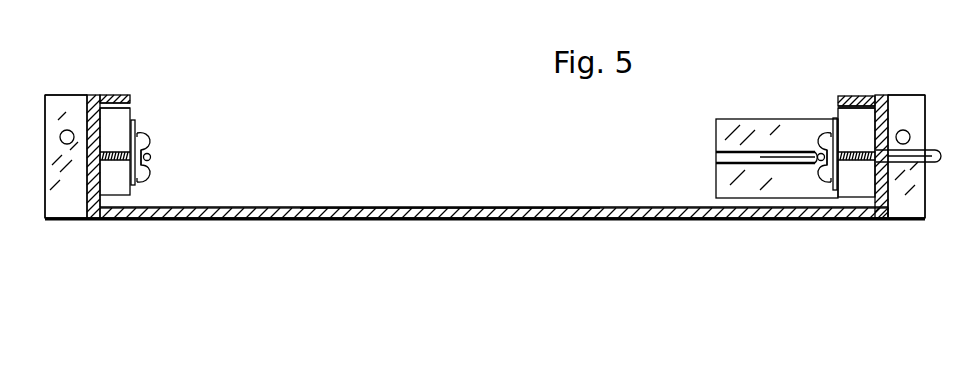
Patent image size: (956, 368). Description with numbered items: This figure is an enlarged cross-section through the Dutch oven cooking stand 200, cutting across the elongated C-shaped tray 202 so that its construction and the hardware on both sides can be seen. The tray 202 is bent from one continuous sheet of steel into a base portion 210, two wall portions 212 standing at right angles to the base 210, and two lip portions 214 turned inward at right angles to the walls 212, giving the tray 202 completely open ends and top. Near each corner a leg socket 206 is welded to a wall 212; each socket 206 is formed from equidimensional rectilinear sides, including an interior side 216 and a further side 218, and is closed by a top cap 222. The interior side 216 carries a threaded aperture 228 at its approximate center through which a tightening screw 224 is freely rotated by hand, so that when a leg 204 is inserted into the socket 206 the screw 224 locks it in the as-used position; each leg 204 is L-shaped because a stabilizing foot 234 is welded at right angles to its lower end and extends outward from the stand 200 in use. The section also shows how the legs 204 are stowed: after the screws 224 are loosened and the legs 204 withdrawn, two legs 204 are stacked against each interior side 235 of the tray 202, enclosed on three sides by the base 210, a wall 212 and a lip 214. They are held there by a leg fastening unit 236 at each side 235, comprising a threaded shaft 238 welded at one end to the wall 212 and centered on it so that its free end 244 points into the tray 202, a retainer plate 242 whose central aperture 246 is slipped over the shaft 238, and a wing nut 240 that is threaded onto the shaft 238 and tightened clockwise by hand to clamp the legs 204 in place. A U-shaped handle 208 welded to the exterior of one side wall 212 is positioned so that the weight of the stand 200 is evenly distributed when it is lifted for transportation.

The Dutch oven cooking stand 200 is at (413, 192).
The C-shaped tray 202 is at (545, 207).
The legs 204 is at (150, 134).
The leg sockets 206 is at (45, 131).
The handle 208 is at (905, 165).
The base portion 210 is at (440, 207).
The wall portions 212 is at (102, 220).
The lip portions 214 is at (120, 152).
The interior side 216 is at (87, 218).
The rectilinear side 218 is at (44, 218).
The top cap 222 is at (63, 126).
The tightening screw 224 is at (132, 113).
The aperture 228 is at (106, 96).
The stabilizing foot 234 is at (716, 157).
The interior sides 235 is at (138, 122).
The leg fastening unit 236 is at (160, 160).
The threaded shaft 238 is at (150, 175).
The wing nut 240 is at (153, 142).
The retainer plate 242 is at (138, 138).
The free end 244 is at (146, 178).
The aperture 246 is at (146, 182).